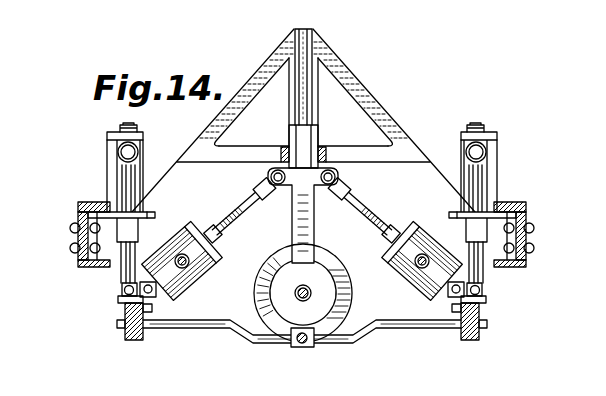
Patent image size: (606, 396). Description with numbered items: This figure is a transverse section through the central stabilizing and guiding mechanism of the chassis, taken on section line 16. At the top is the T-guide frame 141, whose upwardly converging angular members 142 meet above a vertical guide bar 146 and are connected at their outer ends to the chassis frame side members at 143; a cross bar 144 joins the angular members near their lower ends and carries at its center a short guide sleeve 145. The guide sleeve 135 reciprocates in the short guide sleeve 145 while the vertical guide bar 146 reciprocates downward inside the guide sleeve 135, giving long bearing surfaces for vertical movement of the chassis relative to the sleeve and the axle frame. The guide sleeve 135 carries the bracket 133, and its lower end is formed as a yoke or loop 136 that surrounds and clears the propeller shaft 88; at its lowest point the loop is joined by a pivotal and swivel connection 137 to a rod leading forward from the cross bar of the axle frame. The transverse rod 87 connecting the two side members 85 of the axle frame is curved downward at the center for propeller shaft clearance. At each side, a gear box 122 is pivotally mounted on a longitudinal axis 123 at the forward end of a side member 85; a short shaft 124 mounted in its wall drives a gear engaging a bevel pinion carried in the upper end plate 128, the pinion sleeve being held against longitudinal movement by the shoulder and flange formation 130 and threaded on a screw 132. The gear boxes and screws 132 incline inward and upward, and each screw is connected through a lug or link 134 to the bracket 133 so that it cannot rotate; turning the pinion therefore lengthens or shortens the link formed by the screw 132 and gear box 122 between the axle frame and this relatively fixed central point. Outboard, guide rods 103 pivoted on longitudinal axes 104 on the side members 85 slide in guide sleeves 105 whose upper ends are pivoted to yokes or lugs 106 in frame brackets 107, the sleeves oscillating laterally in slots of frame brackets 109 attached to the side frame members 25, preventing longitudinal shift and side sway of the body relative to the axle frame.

The section line indicator 16 is at (234, 223).
The side frame member 25 is at (72, 238).
The side member 85 is at (142, 332).
The rod 87 is at (205, 327).
The propeller shaft 88 is at (295, 295).
The guide rod 103 is at (127, 268).
The longitudinal axis 104 is at (122, 291).
The guide sleeve 105 is at (120, 173).
The yoke or lug 106 is at (107, 141).
The frame bracket 107 is at (118, 129).
The frame bracket 109 is at (148, 212).
The gear box 122 is at (206, 250).
The longitudinal axis 123 is at (124, 282).
The short shaft 124 is at (203, 256).
The upper end plate 128 is at (198, 230).
The shoulder and flange formation 130 is at (213, 241).
The screw 132 is at (241, 207).
The bracket 133 is at (312, 203).
The lug or link 134 is at (263, 173).
The guide sleeve 135 is at (310, 133).
The yoke or loop 136 is at (351, 305).
The pivotal and swivel connection 137 is at (301, 347).
The frame 141 is at (414, 129).
The angular member 142 is at (214, 117).
The connection to chassis frame side members 143 is at (78, 210).
The cross bar 144 is at (238, 150).
The short guide sleeve 145 is at (285, 150).
The vertical guide bar 146 is at (308, 102).